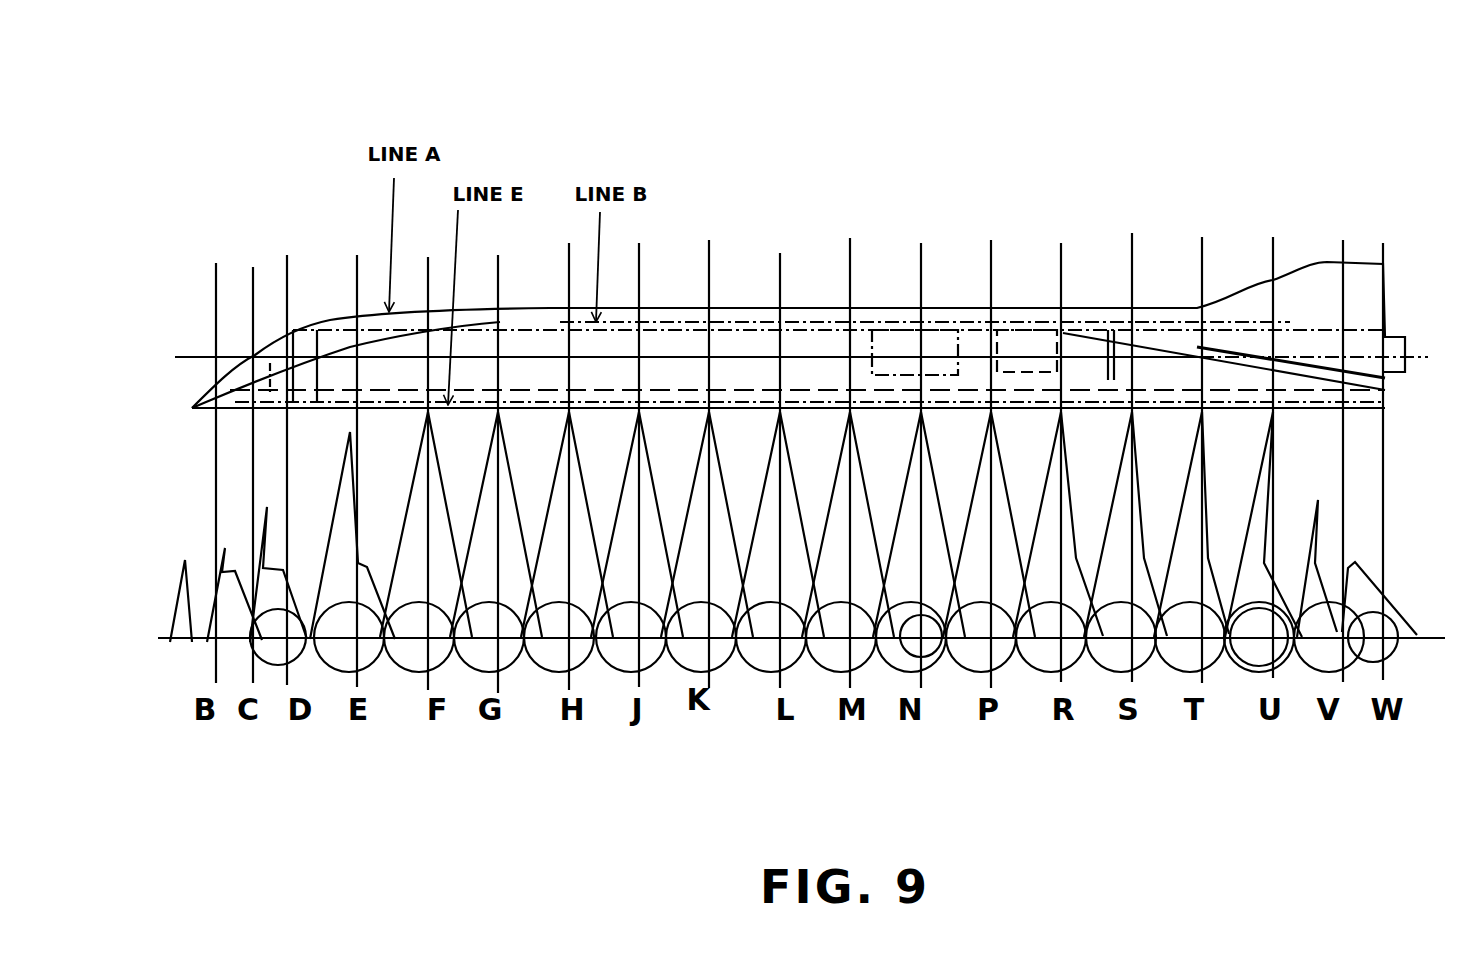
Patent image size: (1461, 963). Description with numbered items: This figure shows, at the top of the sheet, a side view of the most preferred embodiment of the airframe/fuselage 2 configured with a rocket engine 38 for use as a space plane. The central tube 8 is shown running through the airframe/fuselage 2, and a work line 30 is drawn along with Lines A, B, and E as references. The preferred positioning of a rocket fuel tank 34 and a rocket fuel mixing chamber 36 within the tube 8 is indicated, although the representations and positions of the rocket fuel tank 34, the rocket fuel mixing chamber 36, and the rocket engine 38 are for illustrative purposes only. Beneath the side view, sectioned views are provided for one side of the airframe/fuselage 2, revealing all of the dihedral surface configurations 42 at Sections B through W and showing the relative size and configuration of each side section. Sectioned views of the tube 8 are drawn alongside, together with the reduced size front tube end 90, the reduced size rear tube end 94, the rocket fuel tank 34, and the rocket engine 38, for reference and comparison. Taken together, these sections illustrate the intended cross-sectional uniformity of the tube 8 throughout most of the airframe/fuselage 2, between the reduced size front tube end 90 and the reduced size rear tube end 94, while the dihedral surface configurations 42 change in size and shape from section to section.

The airframe/fuselage 2 is at (430, 50).
The work line 30 is at (235, 356).
The tube 8 is at (747, 400).
The rocket fuel tank 34 is at (893, 345).
The rocket fuel mixing chamber 36 is at (1022, 343).
The rocket engine 38 is at (1317, 347).
The dihedral surface configurations 42 is at (410, 482).
The reduced size front tube end 90 is at (273, 660).
The reduced size rear tube end 94 is at (1410, 667).